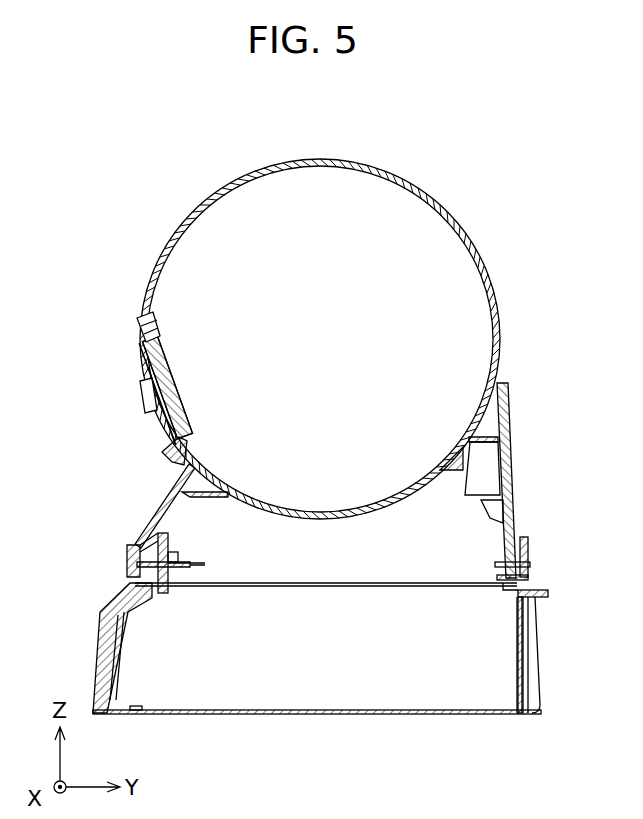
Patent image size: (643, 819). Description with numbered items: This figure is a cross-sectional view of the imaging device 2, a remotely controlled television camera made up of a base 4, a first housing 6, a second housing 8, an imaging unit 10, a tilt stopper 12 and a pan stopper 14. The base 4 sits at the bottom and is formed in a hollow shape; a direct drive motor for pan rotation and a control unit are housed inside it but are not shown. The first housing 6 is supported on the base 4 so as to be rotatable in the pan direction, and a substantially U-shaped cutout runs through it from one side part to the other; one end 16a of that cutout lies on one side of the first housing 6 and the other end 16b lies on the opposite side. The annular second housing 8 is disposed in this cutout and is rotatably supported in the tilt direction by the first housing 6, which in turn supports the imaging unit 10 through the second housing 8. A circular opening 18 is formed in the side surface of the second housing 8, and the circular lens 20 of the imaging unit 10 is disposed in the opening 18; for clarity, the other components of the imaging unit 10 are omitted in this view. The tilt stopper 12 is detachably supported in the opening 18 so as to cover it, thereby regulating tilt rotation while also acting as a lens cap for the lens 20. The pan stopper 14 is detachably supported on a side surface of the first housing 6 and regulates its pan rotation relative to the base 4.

The imaging device 2 is at (447, 170).
The base 4 is at (537, 682).
The first housing 6 is at (513, 467).
The second housing 8 is at (472, 240).
The imaging unit 10 is at (189, 407).
The tilt stopper 12 is at (147, 366).
The pan stopper 14 is at (529, 563).
The one end of cutout 16a is at (180, 465).
The other end of cutout 16b is at (503, 384).
The opening 18 is at (136, 326).
The lens 20 is at (170, 354).